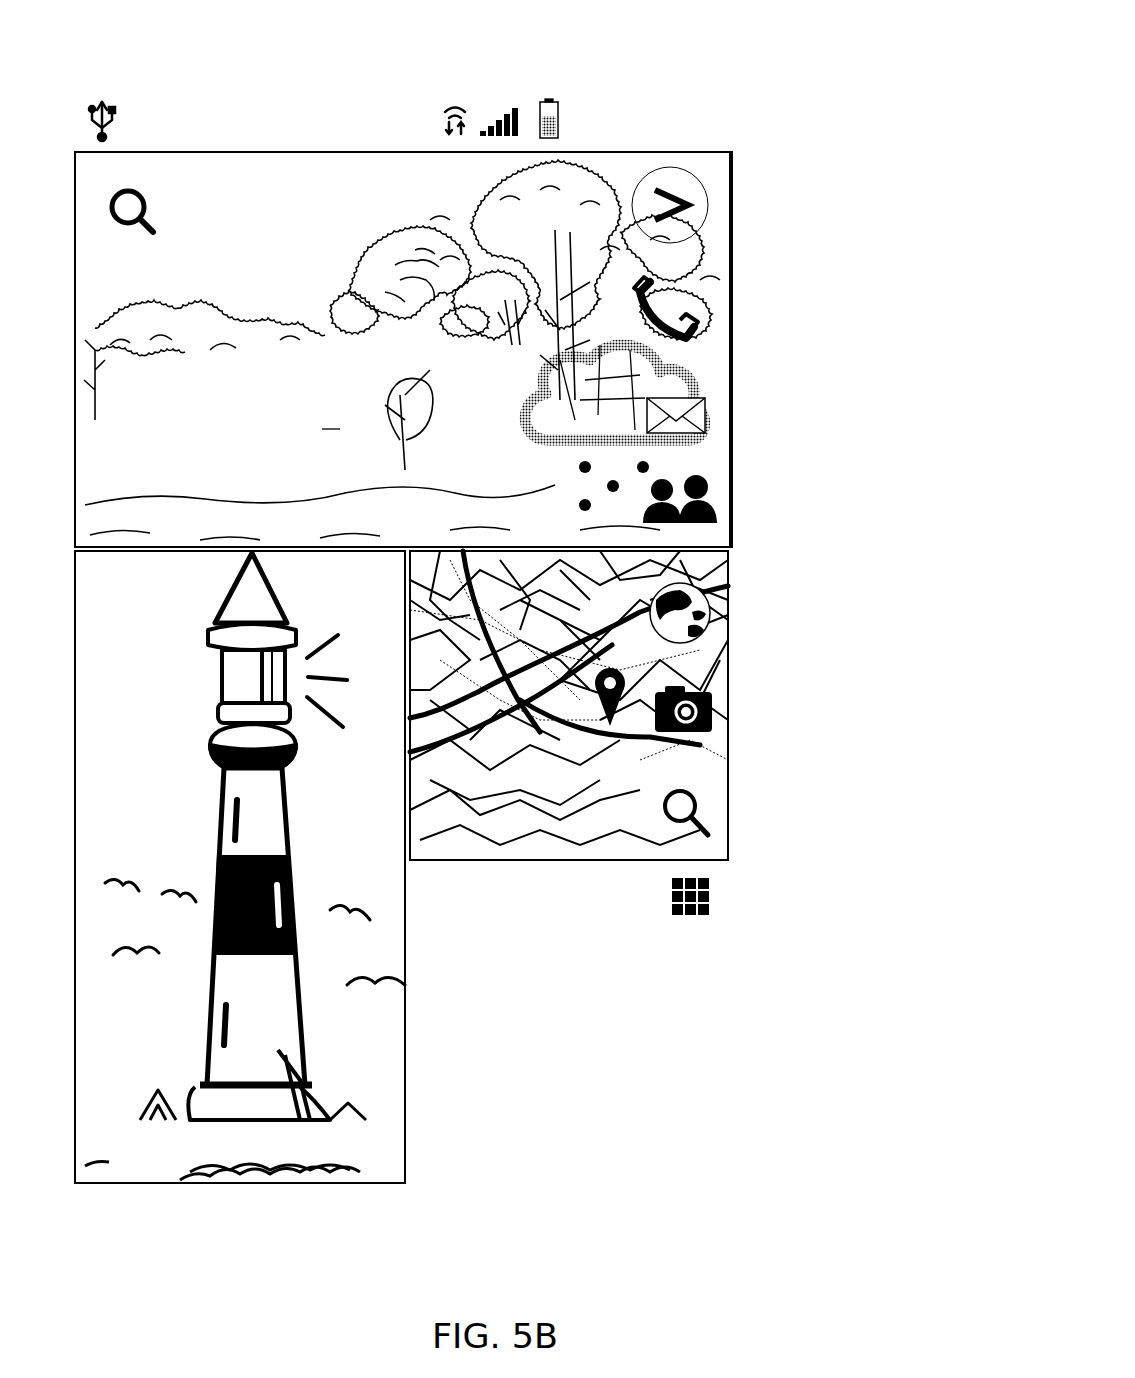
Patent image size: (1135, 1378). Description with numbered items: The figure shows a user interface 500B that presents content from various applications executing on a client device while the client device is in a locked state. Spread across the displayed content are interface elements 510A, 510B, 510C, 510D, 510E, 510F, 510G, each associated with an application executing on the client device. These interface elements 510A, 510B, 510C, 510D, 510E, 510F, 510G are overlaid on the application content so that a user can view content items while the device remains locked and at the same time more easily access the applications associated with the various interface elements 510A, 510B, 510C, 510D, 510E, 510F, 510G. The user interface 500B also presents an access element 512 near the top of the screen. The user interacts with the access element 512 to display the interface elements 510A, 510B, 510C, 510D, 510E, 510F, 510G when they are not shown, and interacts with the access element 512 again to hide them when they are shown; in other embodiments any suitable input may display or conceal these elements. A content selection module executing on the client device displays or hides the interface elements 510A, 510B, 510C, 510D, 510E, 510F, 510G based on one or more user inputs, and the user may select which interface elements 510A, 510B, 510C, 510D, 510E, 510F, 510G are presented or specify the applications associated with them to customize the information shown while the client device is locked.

The user interface 500B is at (720, 52).
The access element 512 is at (742, 200).
The interface element 510A is at (742, 303).
The interface element 510B is at (742, 408).
The interface element 510C is at (742, 502).
The interface element 510D is at (742, 613).
The interface element 510E is at (742, 708).
The interface element 510F is at (742, 812).
The interface element 510G is at (742, 895).